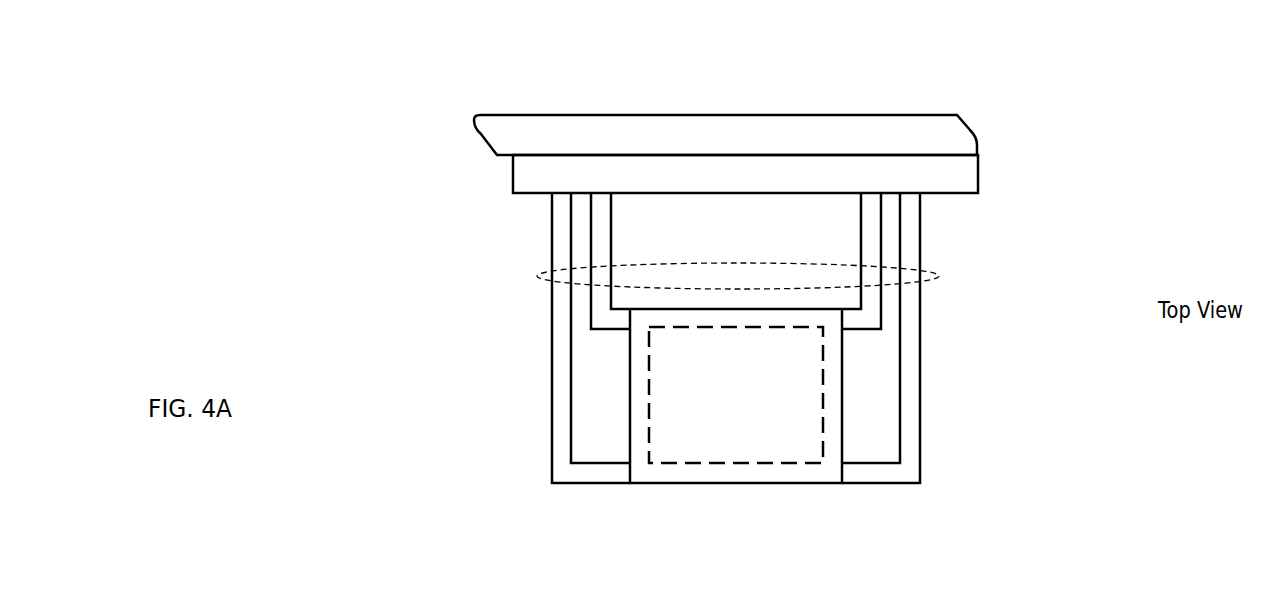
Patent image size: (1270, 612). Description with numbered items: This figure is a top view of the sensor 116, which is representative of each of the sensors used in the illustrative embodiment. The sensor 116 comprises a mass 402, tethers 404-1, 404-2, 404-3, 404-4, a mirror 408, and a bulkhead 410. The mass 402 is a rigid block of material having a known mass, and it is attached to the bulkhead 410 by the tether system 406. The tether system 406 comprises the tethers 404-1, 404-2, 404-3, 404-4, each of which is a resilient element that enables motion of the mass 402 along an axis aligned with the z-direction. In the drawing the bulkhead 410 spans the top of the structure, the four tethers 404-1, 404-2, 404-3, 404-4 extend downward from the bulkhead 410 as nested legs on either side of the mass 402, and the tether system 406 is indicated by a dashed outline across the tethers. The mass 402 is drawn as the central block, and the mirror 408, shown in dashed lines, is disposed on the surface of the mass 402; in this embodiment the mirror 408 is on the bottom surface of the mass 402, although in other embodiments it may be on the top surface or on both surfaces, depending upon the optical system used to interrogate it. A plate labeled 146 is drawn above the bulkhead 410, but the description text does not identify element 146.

The sensor 116 is at (430, 69).
The substrate / plate 146 is at (948, 132).
The bulkhead 410 is at (763, 184).
The tether 404-1 is at (562, 424).
The tether 404-2 is at (611, 240).
The tether 404-3 is at (861, 240).
The tether 404-4 is at (908, 425).
The mass 402 is at (765, 483).
The mirror 408 is at (763, 416).
The tether system 406 is at (540, 278).